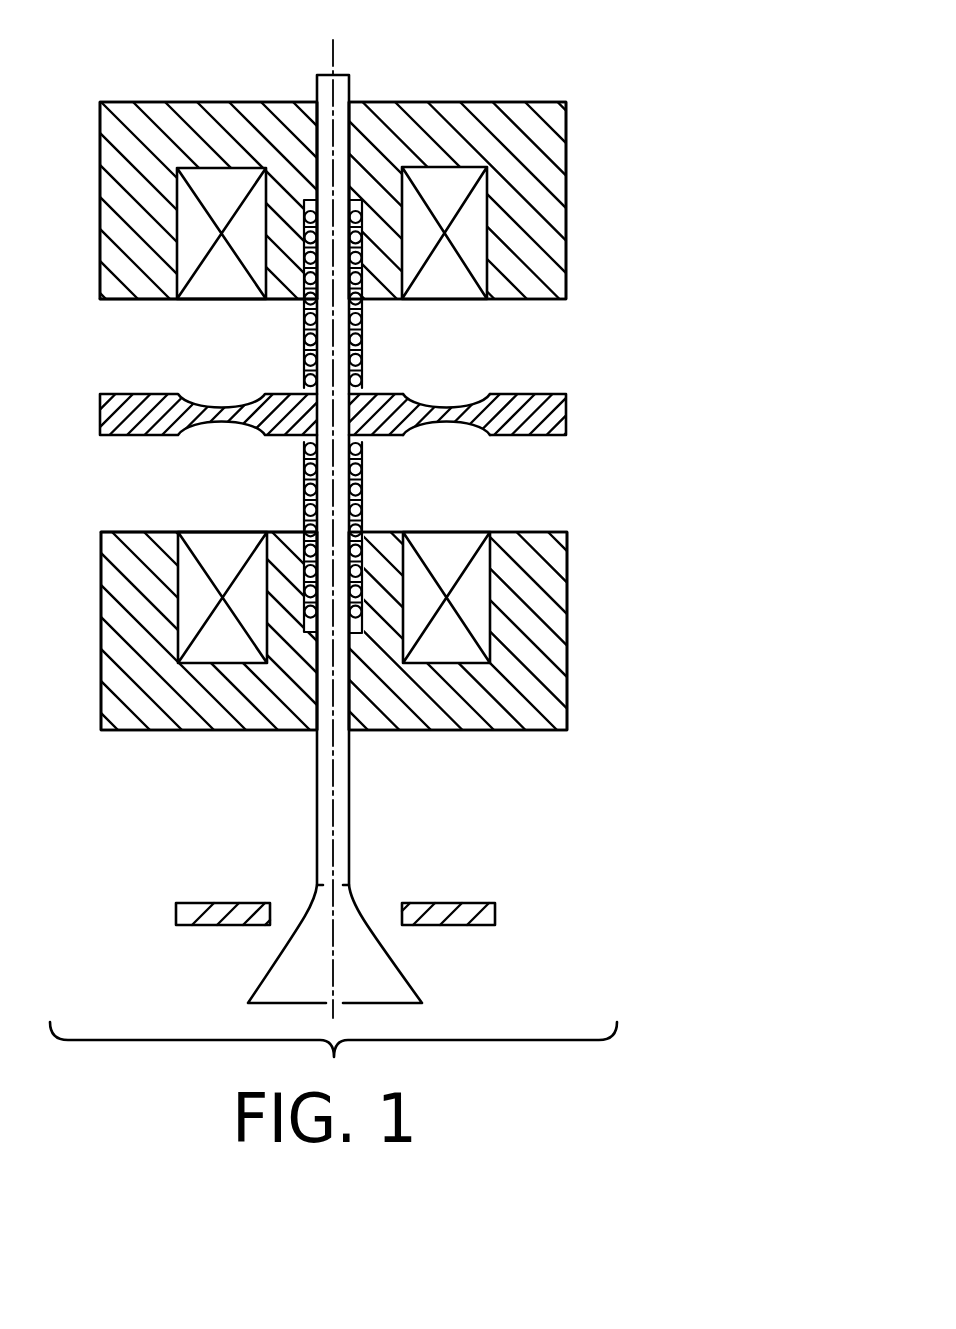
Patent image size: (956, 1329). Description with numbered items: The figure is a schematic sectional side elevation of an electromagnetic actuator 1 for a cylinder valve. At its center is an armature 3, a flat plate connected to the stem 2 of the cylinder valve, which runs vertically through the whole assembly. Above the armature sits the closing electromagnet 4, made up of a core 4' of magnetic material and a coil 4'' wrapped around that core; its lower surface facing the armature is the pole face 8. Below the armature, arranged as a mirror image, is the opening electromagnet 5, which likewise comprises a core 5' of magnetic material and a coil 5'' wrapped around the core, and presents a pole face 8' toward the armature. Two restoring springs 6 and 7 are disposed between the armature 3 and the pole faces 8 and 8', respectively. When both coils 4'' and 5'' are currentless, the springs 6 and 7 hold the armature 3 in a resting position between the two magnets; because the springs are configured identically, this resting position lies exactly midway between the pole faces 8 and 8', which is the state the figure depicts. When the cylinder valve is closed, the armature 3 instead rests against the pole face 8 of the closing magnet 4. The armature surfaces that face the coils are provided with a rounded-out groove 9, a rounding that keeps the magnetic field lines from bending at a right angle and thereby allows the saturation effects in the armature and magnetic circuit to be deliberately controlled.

The electromagnetic actuator 1 is at (790, 441).
The stem 2 is at (345, 796).
The armature 3 is at (566, 418).
The closing electromagnet 4 is at (384, 152).
The core 4' is at (377, 200).
The coil 4'' is at (263, 230).
The opening electromagnet 5 is at (390, 631).
The core 5' is at (373, 631).
The coil 5'' is at (270, 597).
The restoring spring 6 is at (358, 337).
The restoring spring 7 is at (358, 490).
The pole face 8 is at (203, 339).
The pole face 8' is at (209, 491).
The rounded-out groove 9 is at (467, 374).